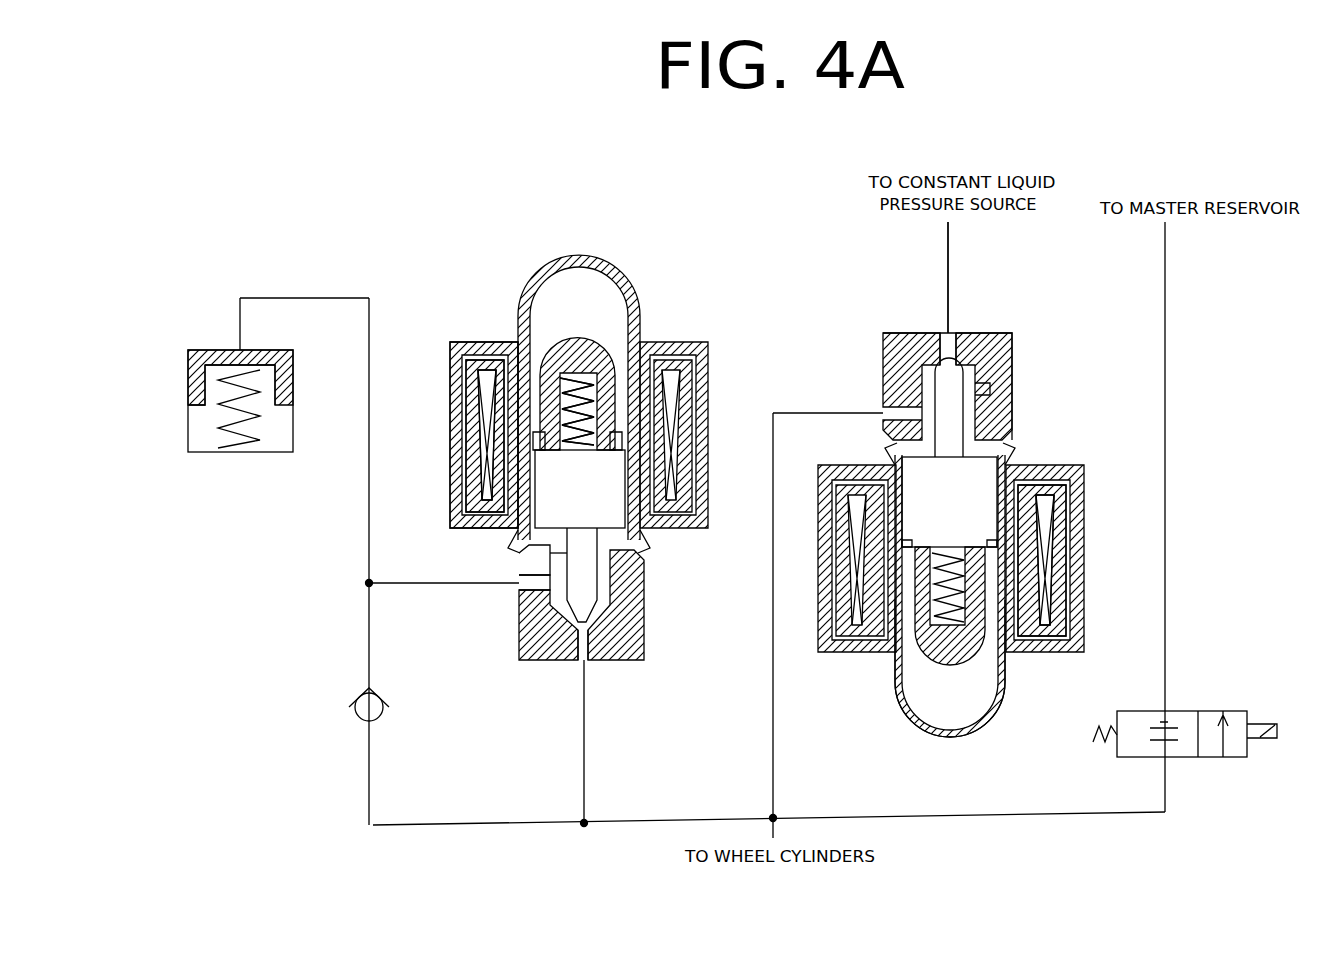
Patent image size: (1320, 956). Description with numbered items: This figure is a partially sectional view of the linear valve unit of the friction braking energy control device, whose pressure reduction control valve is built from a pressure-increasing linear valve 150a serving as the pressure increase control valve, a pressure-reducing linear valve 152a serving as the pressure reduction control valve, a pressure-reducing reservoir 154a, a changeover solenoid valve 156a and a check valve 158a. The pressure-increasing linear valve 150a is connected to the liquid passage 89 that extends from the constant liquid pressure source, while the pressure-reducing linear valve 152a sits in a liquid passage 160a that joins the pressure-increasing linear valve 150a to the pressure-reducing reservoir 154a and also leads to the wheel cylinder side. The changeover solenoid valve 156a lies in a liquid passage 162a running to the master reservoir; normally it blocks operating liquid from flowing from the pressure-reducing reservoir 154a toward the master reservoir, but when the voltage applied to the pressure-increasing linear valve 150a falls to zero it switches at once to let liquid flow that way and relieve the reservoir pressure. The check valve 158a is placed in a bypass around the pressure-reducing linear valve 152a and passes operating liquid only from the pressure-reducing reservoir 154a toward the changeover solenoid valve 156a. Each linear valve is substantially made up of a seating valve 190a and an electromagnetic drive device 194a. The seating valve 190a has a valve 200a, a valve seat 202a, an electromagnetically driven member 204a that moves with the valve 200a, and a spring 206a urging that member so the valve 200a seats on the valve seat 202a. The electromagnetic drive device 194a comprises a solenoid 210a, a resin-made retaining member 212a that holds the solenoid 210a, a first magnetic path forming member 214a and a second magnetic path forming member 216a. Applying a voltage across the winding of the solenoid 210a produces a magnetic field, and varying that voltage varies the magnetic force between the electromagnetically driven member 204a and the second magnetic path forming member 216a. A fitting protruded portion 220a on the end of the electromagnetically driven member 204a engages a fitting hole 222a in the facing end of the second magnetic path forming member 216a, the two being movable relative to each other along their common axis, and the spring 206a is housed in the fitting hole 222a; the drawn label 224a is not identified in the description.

The liquid passage 89 is at (948, 282).
The pressure-increasing linear valve 150a is at (870, 290).
The pressure-reducing linear valve 152a is at (500, 305).
The pressure-reducing reservoir 154a is at (243, 460).
The changeover solenoid valve 156a is at (1190, 495).
The check valve 158a is at (388, 733).
The liquid passage 160a is at (655, 822).
The liquid passage 162a is at (990, 815).
The seating valve 190a is at (660, 635).
The electromagnetic drive device 194a is at (455, 335).
The valve 200a is at (570, 640).
The valve seat 202a is at (525, 618).
The electromagnetically driven member 204a is at (612, 520).
The spring 206a is at (915, 700).
The solenoid 210a is at (462, 410).
The resin-made retaining member 212a is at (462, 470).
The first magnetic path forming member 214a is at (455, 510).
The second magnetic path forming member 216a is at (600, 285).
The fitting protruded portion 220a is at (625, 448).
The fitting hole 222a is at (612, 410).
The spring 224a is at (590, 375).